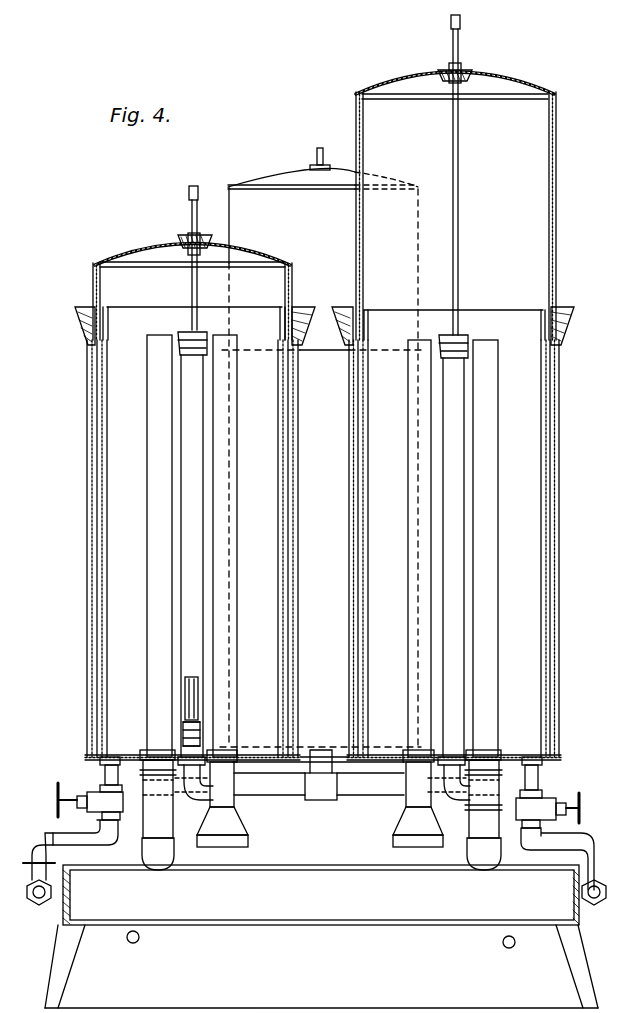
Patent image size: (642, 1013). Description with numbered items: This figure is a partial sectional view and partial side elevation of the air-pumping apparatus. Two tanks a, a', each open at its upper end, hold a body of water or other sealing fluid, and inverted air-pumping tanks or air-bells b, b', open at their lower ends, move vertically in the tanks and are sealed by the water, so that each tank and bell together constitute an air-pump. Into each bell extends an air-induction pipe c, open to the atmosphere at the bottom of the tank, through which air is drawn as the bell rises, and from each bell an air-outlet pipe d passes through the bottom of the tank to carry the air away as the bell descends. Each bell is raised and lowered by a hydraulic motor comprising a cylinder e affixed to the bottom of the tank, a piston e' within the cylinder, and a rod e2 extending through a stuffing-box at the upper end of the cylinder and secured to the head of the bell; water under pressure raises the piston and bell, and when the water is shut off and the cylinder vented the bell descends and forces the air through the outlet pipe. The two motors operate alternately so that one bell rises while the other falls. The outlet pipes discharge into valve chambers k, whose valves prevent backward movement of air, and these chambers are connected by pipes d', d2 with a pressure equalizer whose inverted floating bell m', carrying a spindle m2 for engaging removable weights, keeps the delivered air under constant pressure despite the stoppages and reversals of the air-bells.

The tank a is at (160, 532).
The tank a' is at (474, 533).
The inverted air-pumping tank or air-bell b is at (185, 502).
The inverted air-pumping tank or air-bell b' is at (459, 416).
The air-induction pipe c is at (235, 575).
The air-outlet pipe d is at (314, 777).
The pipe d' is at (320, 798).
The pipe d2 is at (317, 777).
The cylinder e is at (317, 546).
The piston e' is at (158, 712).
The rod e2 is at (190, 292).
The valve chamber k is at (507, 782).
The inverted floating tank or bell m' is at (316, 447).
The spindle m2 is at (320, 157).